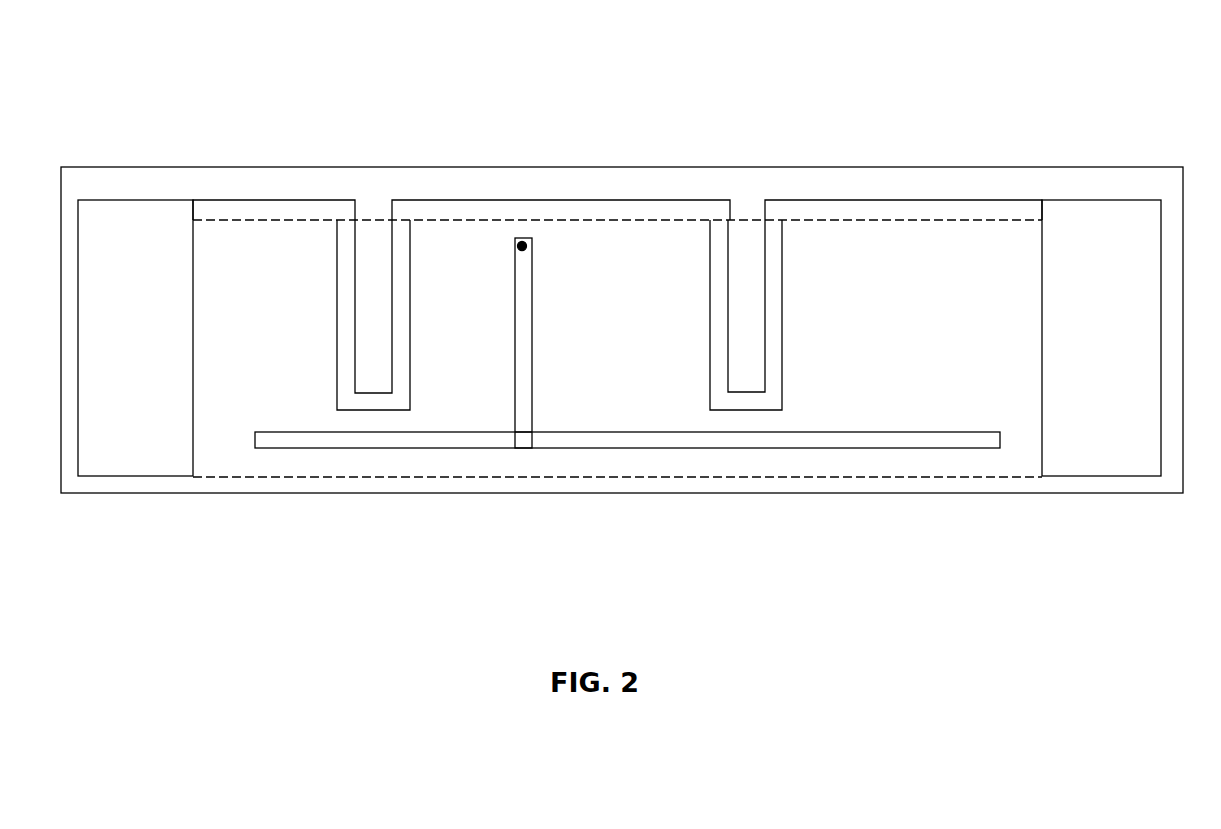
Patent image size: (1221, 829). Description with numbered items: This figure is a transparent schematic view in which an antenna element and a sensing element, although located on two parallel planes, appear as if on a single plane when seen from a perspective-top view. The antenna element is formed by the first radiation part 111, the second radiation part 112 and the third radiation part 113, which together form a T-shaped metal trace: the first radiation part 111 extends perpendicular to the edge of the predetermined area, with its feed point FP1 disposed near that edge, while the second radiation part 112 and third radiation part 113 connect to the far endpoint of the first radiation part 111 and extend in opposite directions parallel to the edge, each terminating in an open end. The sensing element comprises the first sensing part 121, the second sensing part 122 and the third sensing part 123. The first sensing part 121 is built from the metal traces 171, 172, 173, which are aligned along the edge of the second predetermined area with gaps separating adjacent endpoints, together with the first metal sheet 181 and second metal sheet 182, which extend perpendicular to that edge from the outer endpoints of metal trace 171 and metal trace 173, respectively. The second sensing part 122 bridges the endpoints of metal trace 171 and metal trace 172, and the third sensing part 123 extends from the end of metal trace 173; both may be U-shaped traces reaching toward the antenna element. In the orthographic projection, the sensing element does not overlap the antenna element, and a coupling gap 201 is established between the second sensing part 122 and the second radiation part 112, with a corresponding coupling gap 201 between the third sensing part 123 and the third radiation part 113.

The first sensing part 121 is at (1067, 100).
The metal trace 171 is at (273, 200).
The metal trace 172 is at (558, 200).
The metal trace 173 is at (905, 200).
The second sensing part 122 is at (337, 300).
The third sensing part 123 is at (782, 309).
The first metal sheet 181 is at (137, 200).
The second metal sheet 182 is at (1097, 200).
The first radiation part 111 is at (533, 360).
The second radiation part 112 is at (427, 449).
The third radiation part 113 is at (695, 449).
The feed point FP1 is at (530, 245).
The coupling gap 201 is at (338, 421).